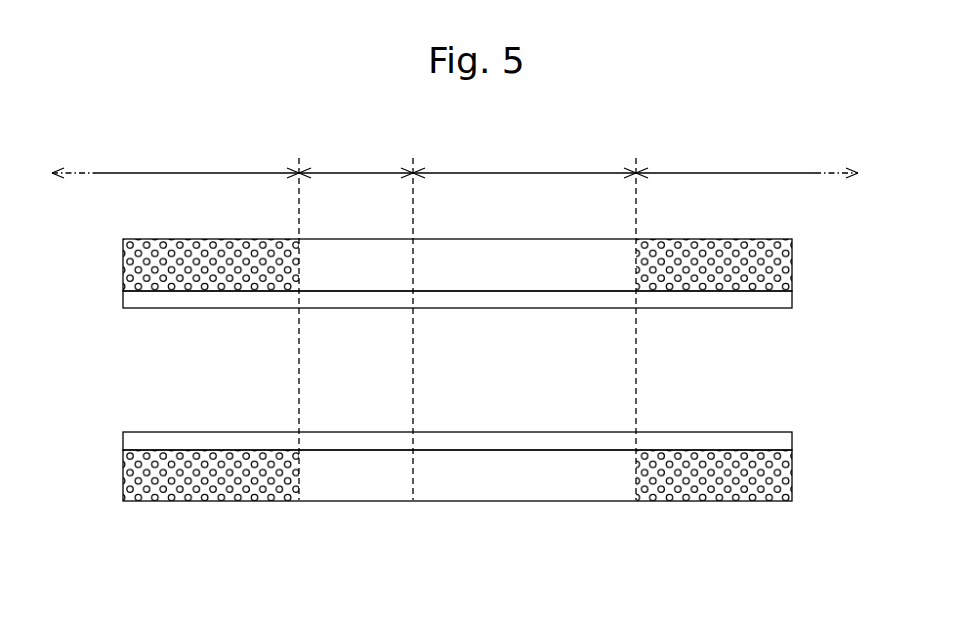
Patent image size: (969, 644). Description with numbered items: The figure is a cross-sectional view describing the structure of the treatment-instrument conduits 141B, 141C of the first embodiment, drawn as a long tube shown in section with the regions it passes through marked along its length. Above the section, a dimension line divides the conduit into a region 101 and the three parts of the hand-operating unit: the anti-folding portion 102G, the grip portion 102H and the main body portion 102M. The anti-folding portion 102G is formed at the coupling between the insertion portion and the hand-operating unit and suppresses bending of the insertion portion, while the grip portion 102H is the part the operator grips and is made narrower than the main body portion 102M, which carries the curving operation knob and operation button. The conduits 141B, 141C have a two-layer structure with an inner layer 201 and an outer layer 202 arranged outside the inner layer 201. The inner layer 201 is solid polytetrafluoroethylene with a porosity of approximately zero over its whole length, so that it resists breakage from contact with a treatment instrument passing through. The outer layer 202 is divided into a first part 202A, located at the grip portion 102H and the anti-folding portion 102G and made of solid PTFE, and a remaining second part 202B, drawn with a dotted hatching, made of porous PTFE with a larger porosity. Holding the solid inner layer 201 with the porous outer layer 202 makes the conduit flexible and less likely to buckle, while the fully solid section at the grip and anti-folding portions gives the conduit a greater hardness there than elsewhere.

The first region 101 is at (175, 323).
The anti-folding portion 102G is at (356, 323).
The grip portion 102H is at (524, 323).
The main body portion 102M is at (747, 162).
The inner layer 201 is at (786, 303).
The outer layer 202 is at (499, 345).
The first part 202A is at (302, 230).
The second part 202B is at (297, 230).
The treatment-instrument conduit 141B is at (499, 394).
The treatment-instrument conduit 141C is at (499, 394).